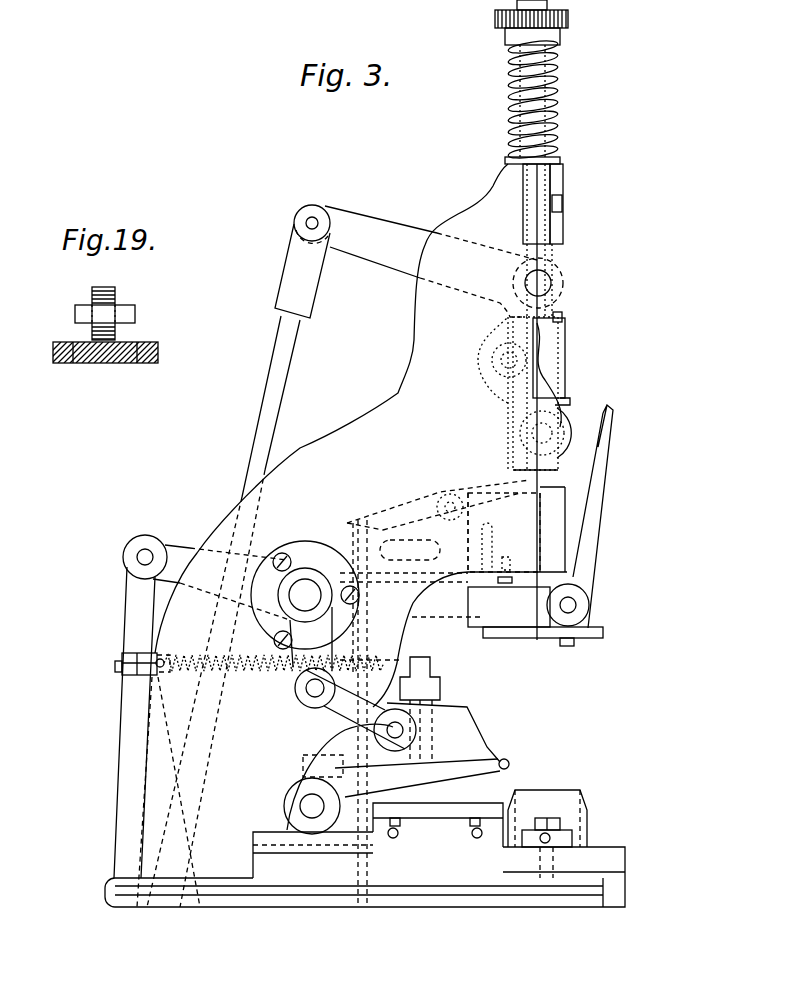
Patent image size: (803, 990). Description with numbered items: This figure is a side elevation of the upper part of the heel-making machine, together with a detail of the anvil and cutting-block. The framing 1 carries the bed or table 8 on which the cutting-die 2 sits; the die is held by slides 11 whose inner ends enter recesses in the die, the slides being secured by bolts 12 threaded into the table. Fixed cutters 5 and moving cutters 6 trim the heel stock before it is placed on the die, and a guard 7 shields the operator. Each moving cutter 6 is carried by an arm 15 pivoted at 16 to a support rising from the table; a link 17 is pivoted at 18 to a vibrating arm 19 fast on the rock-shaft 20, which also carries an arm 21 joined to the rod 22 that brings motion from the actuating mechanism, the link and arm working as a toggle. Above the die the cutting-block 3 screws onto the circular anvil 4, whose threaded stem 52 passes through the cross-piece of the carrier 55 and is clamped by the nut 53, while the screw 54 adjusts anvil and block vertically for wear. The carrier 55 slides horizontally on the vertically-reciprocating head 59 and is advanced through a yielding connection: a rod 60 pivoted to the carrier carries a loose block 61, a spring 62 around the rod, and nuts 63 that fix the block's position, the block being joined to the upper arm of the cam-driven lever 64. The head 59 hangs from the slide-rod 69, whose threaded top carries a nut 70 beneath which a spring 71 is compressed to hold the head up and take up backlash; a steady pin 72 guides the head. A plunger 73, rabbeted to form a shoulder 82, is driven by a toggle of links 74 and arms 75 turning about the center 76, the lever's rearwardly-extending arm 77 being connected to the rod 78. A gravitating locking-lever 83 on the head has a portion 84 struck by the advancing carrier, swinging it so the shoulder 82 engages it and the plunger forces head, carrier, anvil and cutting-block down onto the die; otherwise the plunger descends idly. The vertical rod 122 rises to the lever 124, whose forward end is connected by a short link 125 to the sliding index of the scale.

In FIG. 3, the framing 1 is at (397, 397).
In FIG. 3, the cutting-die 2 is at (585, 800).
In FIG. 19, the cutting-block 3 is at (58, 350).
In FIG. 19, the anvil 4 is at (95, 355).
In FIG. 3, the fixed cutters 5 is at (410, 813).
In FIG. 3, the moving cutters 6 is at (435, 780).
In FIG. 3, the guard 7 is at (508, 760).
In FIG. 3, the bed or table 8 is at (627, 860).
In FIG. 3, the slides 11 is at (567, 835).
In FIG. 3, the bolts 12 is at (550, 818).
In FIG. 3, the arm 15 is at (345, 748).
In FIG. 3, the pivot 16 is at (300, 806).
In FIG. 3, the link 17 is at (372, 722).
In FIG. 3, the pivot connection 18 is at (314, 688).
In FIG. 3, the vibrating arm 19 is at (287, 637).
In FIG. 3, the rock-shaft 20 is at (306, 592).
In FIG. 3, the arm 21 is at (183, 497).
In FIG. 3, the rod 22 is at (125, 828).
In FIG. 19, the threaded stem 52 is at (95, 328).
In FIG. 19, the nut 53 is at (130, 310).
In FIG. 3, the screw 54 is at (440, 682).
In FIG. 3, the carrier 55 is at (575, 638).
In FIG. 3, the vertically-reciprocating head 59 is at (597, 613).
In FIG. 3, the rod 60 is at (115, 667).
In FIG. 3, the block 61 is at (127, 652).
In FIG. 3, the spring 62 is at (153, 650).
In FIG. 3, the nuts 63 is at (125, 655).
In FIG. 3, the lever 64 is at (167, 735).
In FIG. 3, the slide-rod 69 is at (547, 4).
In FIG. 3, the nut 70 is at (568, 22).
In FIG. 3, the spring 71 is at (557, 88).
In FIG. 3, the steady pin 72 is at (493, 547).
In FIG. 3, the plunger 73 is at (568, 363).
In FIG. 3, the link 74 is at (542, 397).
In FIG. 3, the arm 75 is at (572, 335).
In FIG. 3, the center 76 is at (540, 283).
In FIG. 3, the rearwardly-extending arm 77 is at (385, 218).
In FIG. 3, the rod 78 is at (280, 345).
In FIG. 3, the shoulder 82 is at (567, 403).
In FIG. 3, the locking-lever 83 is at (620, 478).
In FIG. 3, the portion of locking-lever 84 is at (570, 645).
In FIG. 3, the vertical rod 122 is at (347, 530).
In FIG. 3, the lever 124 is at (403, 512).
In FIG. 3, the short link 125 is at (547, 500).